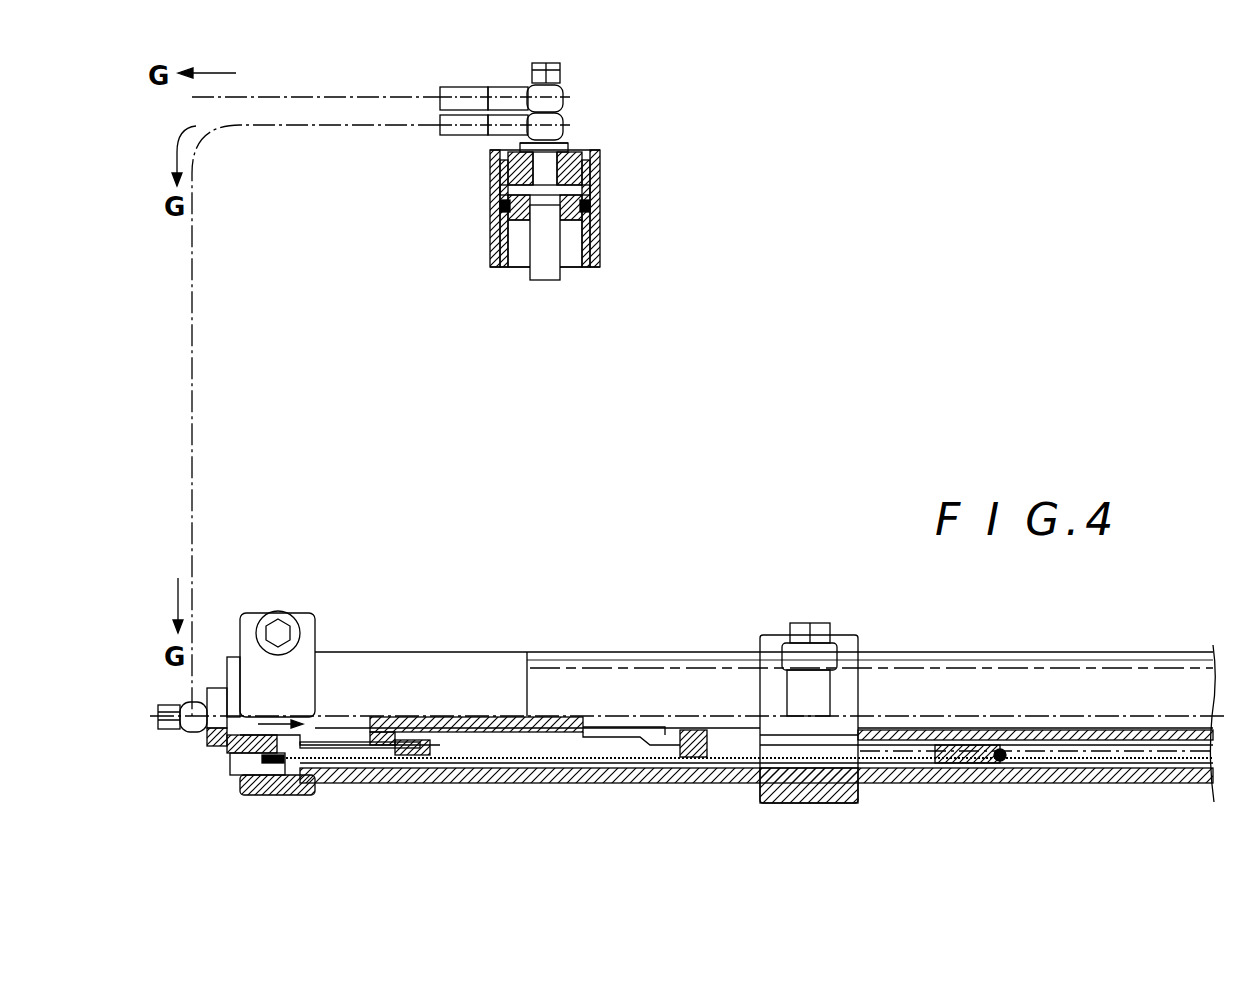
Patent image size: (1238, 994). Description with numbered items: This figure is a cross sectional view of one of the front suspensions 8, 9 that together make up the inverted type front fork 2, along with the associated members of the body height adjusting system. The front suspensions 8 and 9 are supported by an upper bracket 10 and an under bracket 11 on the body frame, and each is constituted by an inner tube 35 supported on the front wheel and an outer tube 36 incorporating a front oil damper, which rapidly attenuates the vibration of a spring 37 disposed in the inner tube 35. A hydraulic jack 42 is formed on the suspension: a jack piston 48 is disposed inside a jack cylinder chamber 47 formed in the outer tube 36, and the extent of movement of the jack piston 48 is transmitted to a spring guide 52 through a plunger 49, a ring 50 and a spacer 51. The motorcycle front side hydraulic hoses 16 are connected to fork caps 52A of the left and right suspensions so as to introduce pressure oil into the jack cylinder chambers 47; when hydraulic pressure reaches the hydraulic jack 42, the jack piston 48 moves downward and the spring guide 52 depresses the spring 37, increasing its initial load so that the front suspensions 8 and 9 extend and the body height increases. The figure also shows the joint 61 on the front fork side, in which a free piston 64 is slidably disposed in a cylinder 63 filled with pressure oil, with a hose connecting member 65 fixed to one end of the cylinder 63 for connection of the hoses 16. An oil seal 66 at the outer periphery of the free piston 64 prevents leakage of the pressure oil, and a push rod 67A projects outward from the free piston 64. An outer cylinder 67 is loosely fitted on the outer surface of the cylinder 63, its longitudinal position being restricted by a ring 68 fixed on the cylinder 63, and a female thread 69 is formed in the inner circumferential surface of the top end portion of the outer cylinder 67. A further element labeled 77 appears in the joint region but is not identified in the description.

The front fork 2 is at (400, 605).
The front suspension 8 is at (610, 625).
The front suspension 9 is at (764, 633).
The upper bracket 10 is at (265, 797).
The under bracket 11 is at (848, 805).
The motorcycle front side hydraulic hose 16 is at (368, 97).
The inner tube 35 is at (1118, 762).
The outer tube 36 is at (562, 785).
The spring 37 is at (1010, 760).
The hydraulic jack 42 is at (395, 760).
The jack cylinder chamber 47 is at (345, 748).
The jack piston 48 is at (385, 727).
The plunger 49 is at (492, 717).
The ring 50 is at (685, 760).
The spacer 51 is at (750, 785).
The spring guide 52 is at (972, 775).
The fork cap 52A is at (210, 745).
The joint 61 is at (470, 268).
The cylinder 63 is at (592, 240).
The free piston 64 is at (500, 228).
The hose connecting member 65 is at (572, 155).
The oil seal 66 is at (500, 206).
The outer cylinder 67 is at (598, 258).
The push rod 67A is at (528, 280).
The ring 68 is at (592, 206).
The female thread 69 is at (588, 270).
The valve plate 77 is at (490, 162).